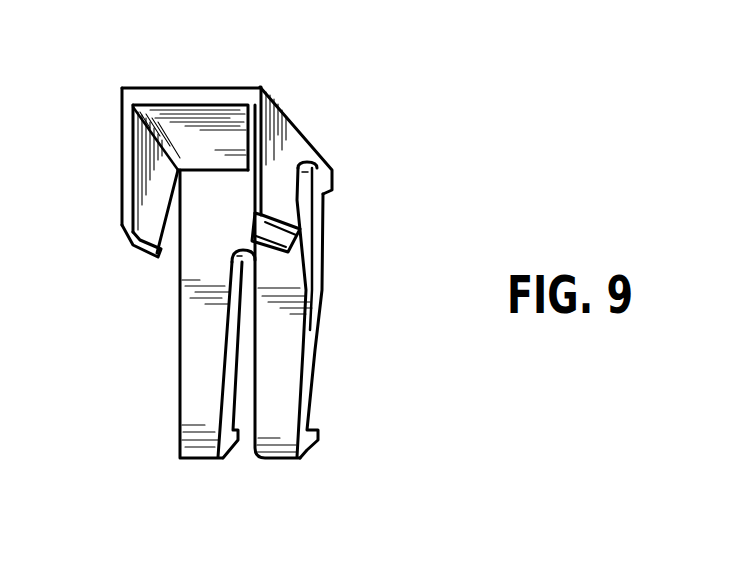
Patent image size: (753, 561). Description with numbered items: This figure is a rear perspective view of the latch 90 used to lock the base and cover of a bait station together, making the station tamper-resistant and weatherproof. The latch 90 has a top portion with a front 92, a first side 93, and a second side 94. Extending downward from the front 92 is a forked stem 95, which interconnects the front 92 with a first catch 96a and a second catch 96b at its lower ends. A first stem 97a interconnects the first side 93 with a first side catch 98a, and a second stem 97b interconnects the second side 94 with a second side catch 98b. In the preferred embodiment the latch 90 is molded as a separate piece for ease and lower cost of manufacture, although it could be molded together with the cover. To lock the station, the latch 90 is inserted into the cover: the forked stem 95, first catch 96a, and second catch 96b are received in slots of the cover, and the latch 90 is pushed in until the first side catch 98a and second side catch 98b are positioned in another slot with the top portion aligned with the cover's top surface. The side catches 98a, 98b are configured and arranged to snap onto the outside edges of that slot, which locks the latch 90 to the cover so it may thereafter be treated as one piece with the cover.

The latch 90 is at (352, 88).
The front 92 is at (225, 172).
The first side 93 is at (290, 115).
The second side 94 is at (143, 135).
The forked stem 95 is at (212, 232).
The first catch 96a is at (307, 445).
The second catch 96b is at (223, 462).
The first stem 97a is at (283, 162).
The second stem 97b is at (138, 182).
The first side catch 98a is at (287, 236).
The second side catch 98b is at (123, 217).